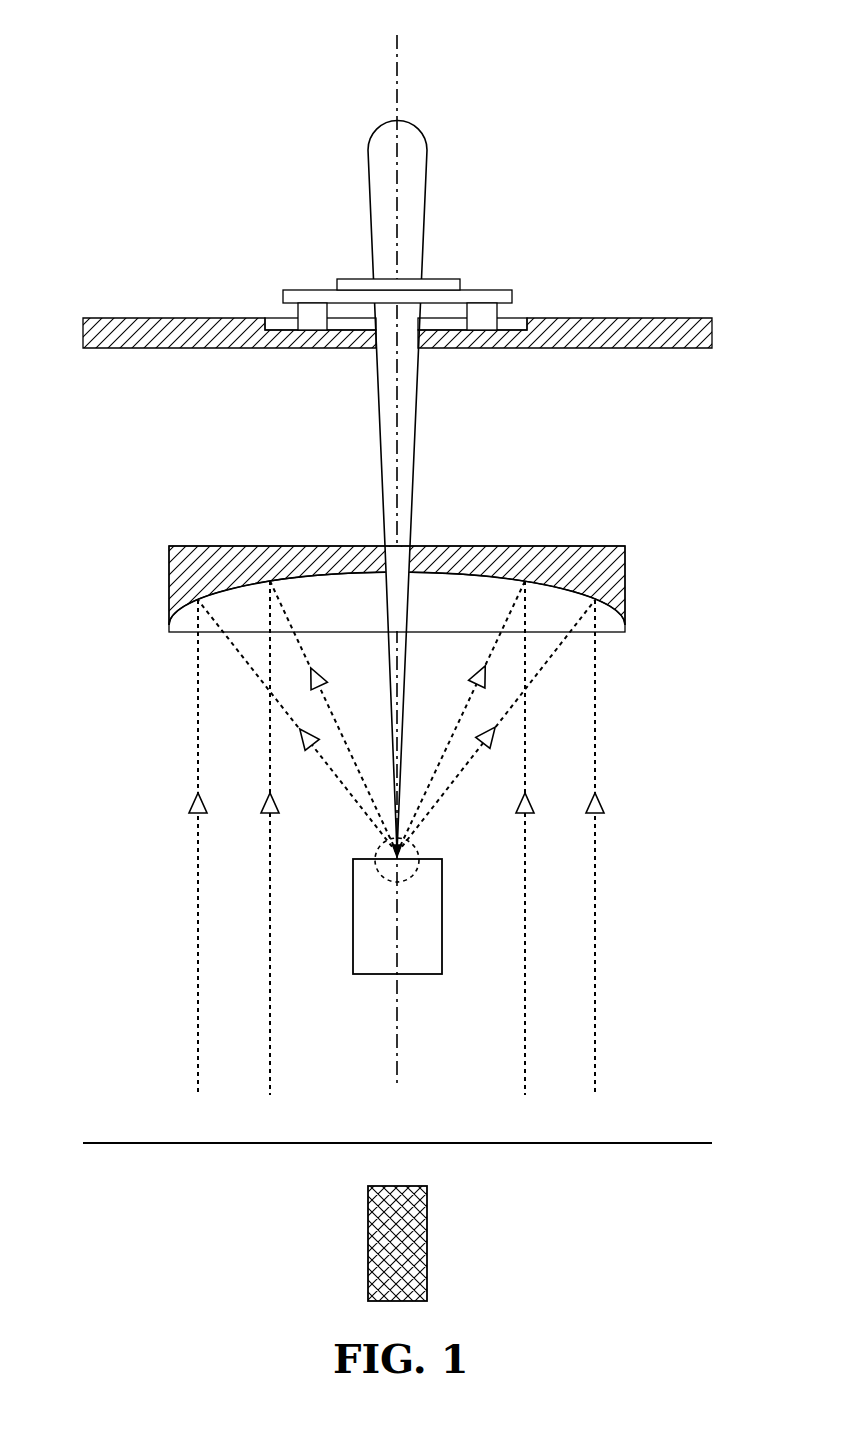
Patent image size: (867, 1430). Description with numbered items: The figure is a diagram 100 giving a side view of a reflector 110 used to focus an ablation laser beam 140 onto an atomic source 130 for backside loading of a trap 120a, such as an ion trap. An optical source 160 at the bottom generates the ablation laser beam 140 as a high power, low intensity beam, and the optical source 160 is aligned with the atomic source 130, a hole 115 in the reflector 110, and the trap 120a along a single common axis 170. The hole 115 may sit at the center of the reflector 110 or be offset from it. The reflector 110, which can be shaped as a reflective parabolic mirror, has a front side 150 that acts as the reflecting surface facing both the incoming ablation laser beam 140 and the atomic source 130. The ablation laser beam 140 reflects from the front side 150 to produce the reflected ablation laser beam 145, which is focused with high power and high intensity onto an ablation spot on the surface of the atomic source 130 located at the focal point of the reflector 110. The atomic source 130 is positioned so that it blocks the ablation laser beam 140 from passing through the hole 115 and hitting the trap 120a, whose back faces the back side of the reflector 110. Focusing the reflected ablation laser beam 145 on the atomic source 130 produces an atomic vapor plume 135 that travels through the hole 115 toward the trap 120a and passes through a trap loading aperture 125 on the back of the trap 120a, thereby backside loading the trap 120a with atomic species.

The diagram 100 is at (153, 50).
The axis 170 is at (397, 92).
The trap loading aperture 125 is at (399, 290).
The trap 120a is at (438, 281).
The atomic vapor plume 135 is at (418, 394).
The hole 115 is at (402, 546).
The reflector 110 is at (625, 563).
The front side 150 is at (363, 575).
The reflected ablation laser beam 145 is at (537, 676).
The ablation laser beam 140 is at (595, 838).
The atomic source 130 is at (442, 974).
The optical source 160 is at (427, 1225).